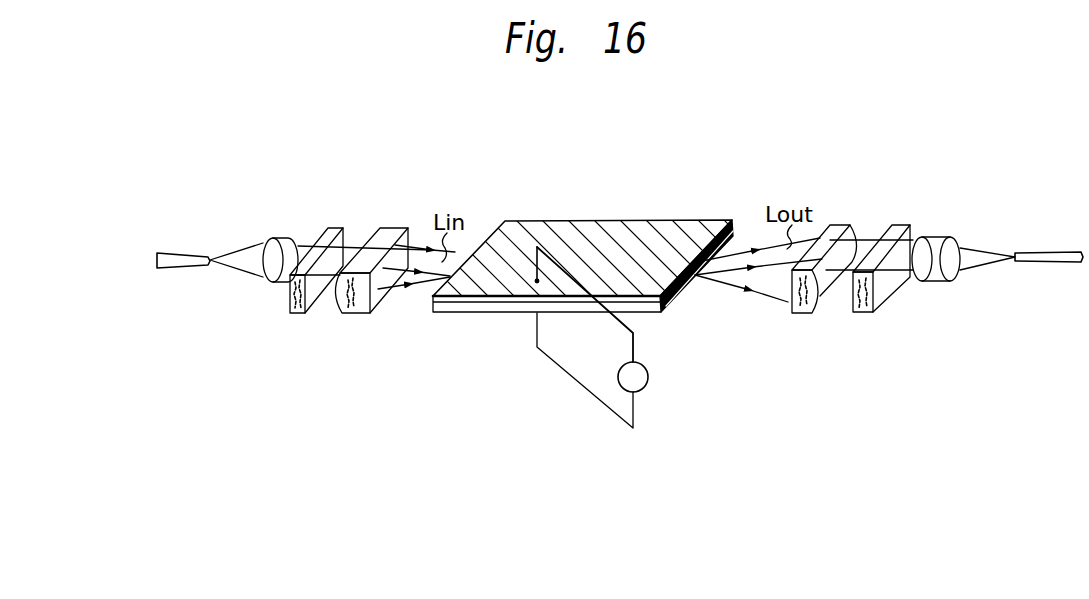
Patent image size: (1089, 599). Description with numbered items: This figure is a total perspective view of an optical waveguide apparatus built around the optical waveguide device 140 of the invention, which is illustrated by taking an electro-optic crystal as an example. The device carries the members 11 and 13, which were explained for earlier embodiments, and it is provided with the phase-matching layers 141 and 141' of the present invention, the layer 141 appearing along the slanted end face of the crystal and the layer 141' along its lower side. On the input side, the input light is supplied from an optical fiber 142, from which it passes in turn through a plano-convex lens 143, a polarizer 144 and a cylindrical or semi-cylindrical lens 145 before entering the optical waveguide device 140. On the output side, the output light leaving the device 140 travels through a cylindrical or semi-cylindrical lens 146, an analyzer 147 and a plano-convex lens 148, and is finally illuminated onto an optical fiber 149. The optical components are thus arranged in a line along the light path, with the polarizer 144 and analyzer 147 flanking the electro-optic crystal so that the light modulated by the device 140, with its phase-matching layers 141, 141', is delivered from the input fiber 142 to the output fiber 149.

The optical waveguide device 140 is at (587, 251).
The phase-matching layer 141 is at (716, 237).
The phase-matching layer 141' is at (547, 329).
The member 11 is at (432, 312).
The member 13 is at (649, 378).
The optical fiber 142 is at (178, 255).
The plano-convex lens 143 is at (278, 243).
The polarizer 144 is at (333, 223).
The cylindrical lens 145 is at (392, 223).
The cylindrical lens 146 is at (841, 225).
The analyzer 147 is at (900, 228).
The plano-convex lens 148 is at (943, 237).
The optical fiber 149 is at (1043, 252).